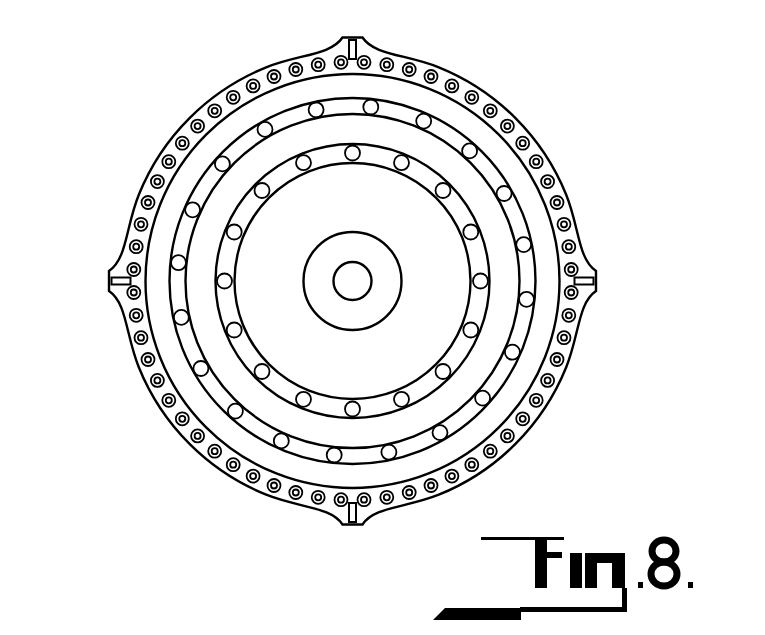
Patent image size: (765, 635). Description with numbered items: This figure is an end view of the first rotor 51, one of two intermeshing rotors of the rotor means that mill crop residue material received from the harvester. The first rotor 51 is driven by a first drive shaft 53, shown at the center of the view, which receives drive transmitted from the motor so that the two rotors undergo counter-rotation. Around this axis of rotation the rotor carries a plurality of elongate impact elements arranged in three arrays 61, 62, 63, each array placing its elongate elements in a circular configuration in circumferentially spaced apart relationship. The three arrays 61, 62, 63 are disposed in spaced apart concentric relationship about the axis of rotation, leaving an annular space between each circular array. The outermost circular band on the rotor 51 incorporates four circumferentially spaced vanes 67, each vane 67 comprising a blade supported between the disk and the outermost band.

The first rotor 51 is at (187, 95).
The first array of elongate impact elements 61 is at (485, 103).
The second array of elongate impact elements 62 is at (490, 172).
The third array of elongate impact elements 63 is at (462, 355).
The vane 67 is at (108, 283).
The first drive shaft 53 is at (325, 300).